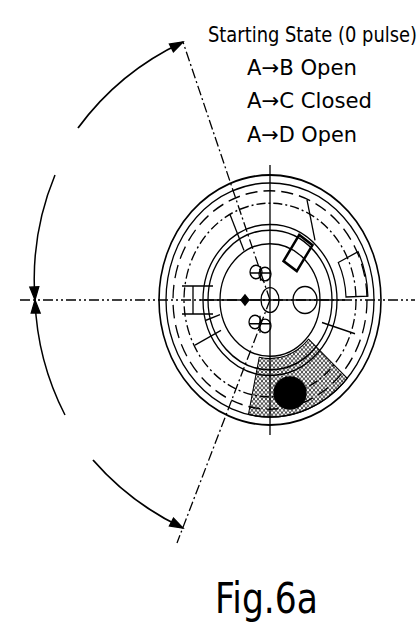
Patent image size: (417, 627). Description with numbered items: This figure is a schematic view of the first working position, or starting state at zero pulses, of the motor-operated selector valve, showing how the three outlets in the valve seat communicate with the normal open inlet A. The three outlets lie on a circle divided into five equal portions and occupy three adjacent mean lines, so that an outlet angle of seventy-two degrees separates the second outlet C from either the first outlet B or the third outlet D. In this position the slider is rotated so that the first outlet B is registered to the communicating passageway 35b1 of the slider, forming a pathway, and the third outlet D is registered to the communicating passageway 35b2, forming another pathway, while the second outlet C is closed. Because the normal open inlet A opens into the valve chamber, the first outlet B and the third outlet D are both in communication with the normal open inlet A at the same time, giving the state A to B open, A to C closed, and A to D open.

The communicating passageway 35b1 is at (256, 268).
The communicating passageway 35b2 is at (258, 328).
The normal open inlet A is at (305, 299).
The first outlet B is at (257, 270).
The second outlet C is at (182, 285).
The third outlet D is at (257, 326).